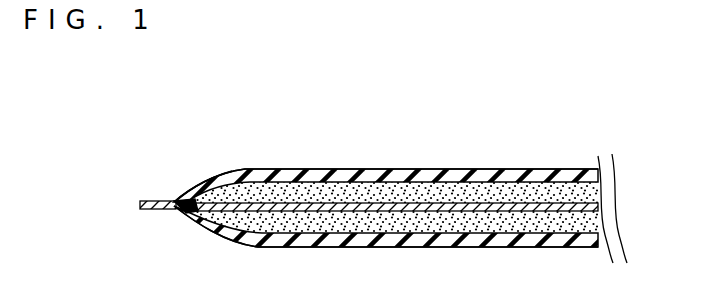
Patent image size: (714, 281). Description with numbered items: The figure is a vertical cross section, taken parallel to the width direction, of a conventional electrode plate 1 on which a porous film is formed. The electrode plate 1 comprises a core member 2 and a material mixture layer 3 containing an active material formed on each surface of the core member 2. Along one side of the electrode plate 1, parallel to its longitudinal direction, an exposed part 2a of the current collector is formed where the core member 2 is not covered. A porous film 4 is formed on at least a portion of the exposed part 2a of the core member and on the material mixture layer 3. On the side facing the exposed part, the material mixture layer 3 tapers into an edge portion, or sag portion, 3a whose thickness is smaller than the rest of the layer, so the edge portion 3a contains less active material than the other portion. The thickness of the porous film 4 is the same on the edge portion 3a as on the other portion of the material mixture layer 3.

The electrode plate 1 is at (429, 130).
The core member 2 is at (596, 201).
The exposed part of the current collector 2a is at (155, 200).
The material mixture layer 3 is at (541, 221).
The edge portion (sag portion) of the material mixture layer 3a is at (223, 189).
The porous film 4 is at (322, 241).